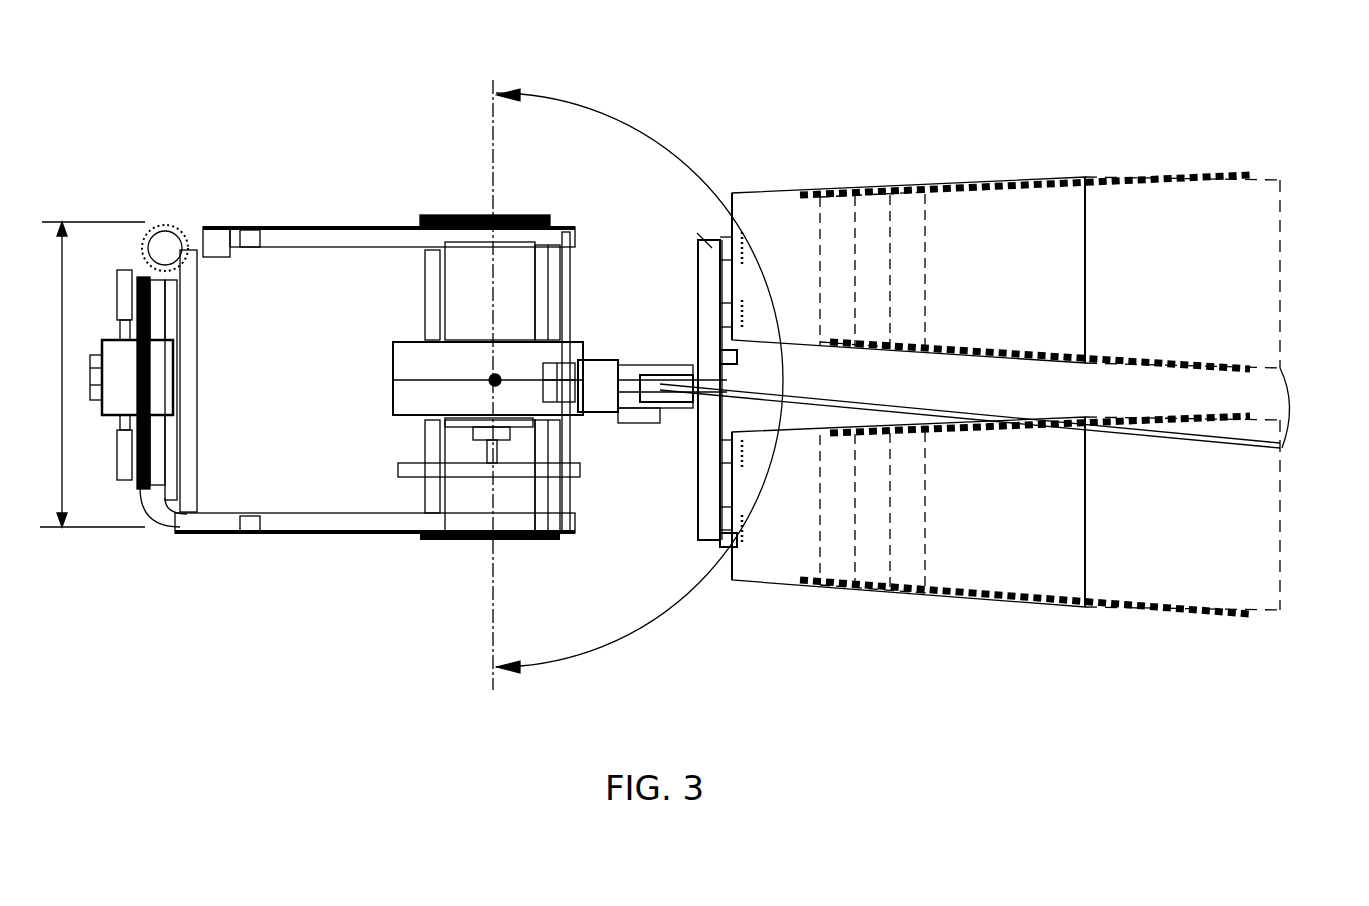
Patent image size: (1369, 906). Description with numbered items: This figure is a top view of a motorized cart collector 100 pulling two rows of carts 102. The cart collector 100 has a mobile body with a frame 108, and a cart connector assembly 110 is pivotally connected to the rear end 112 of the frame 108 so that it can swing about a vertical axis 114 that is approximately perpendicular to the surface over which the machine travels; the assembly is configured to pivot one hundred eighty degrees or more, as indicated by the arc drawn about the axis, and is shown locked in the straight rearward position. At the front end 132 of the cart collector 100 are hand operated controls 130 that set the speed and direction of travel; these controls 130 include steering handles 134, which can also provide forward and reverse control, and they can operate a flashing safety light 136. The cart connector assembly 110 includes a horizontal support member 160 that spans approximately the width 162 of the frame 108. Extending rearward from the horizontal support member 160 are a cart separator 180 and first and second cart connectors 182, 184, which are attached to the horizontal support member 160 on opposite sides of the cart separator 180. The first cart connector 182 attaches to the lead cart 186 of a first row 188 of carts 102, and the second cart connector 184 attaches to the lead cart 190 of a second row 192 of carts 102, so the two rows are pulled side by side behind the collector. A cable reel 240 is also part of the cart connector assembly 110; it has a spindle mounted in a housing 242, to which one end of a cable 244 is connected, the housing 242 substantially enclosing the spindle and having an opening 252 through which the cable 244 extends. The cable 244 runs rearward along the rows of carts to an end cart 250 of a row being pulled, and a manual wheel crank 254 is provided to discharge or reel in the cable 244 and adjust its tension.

The cart collector 100 is at (190, 145).
The carts 102 is at (790, 205).
The frame 108 is at (362, 228).
The cart connector assembly 110 is at (600, 276).
The rear end 112 is at (462, 515).
The vertical axis 114 is at (492, 378).
The hand operated controls 130 is at (110, 492).
The front end 132 is at (178, 522).
The steering handles 134 is at (124, 270).
The flashing safety light 136 is at (178, 238).
The horizontal support member 160 is at (688, 243).
The width 162 is at (87, 374).
The cart separator 180 is at (758, 361).
The first cart connector 182 is at (720, 556).
The second cart connector 184 is at (754, 244).
The lead cart 186 is at (740, 586).
The first row 188 is at (1124, 622).
The lead cart 190 is at (752, 200).
The second row 192 is at (1120, 160).
The cable reel 240 is at (365, 422).
The housing 242 is at (400, 356).
The cable 244 is at (567, 428).
The end cart 250 is at (1266, 272).
The opening 252 is at (560, 368).
The wheel crank 254 is at (570, 476).